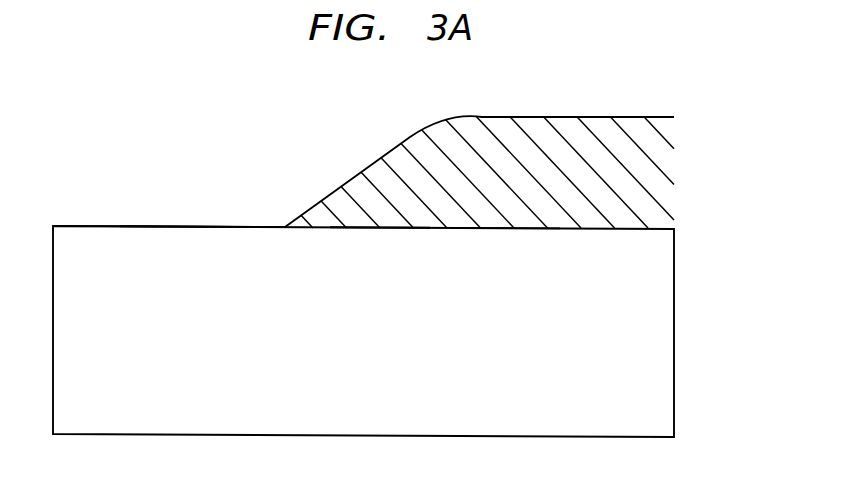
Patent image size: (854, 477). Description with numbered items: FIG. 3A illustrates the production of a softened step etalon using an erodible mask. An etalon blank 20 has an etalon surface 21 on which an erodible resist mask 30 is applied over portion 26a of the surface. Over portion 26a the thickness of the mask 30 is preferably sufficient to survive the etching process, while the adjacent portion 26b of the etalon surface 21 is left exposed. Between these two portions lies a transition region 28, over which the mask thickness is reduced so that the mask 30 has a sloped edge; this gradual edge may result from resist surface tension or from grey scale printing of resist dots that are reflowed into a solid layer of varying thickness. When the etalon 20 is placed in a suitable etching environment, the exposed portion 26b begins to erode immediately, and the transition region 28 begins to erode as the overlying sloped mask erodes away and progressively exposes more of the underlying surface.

The etalon blank 20 is at (642, 338).
The etalon surface 21 is at (78, 225).
The portion of the etalon surface covered by the mask 26a is at (495, 235).
The exposed portion of the etalon surface 26b is at (167, 233).
The transition region 28 is at (372, 235).
The erodible resist mask 30 is at (650, 178).